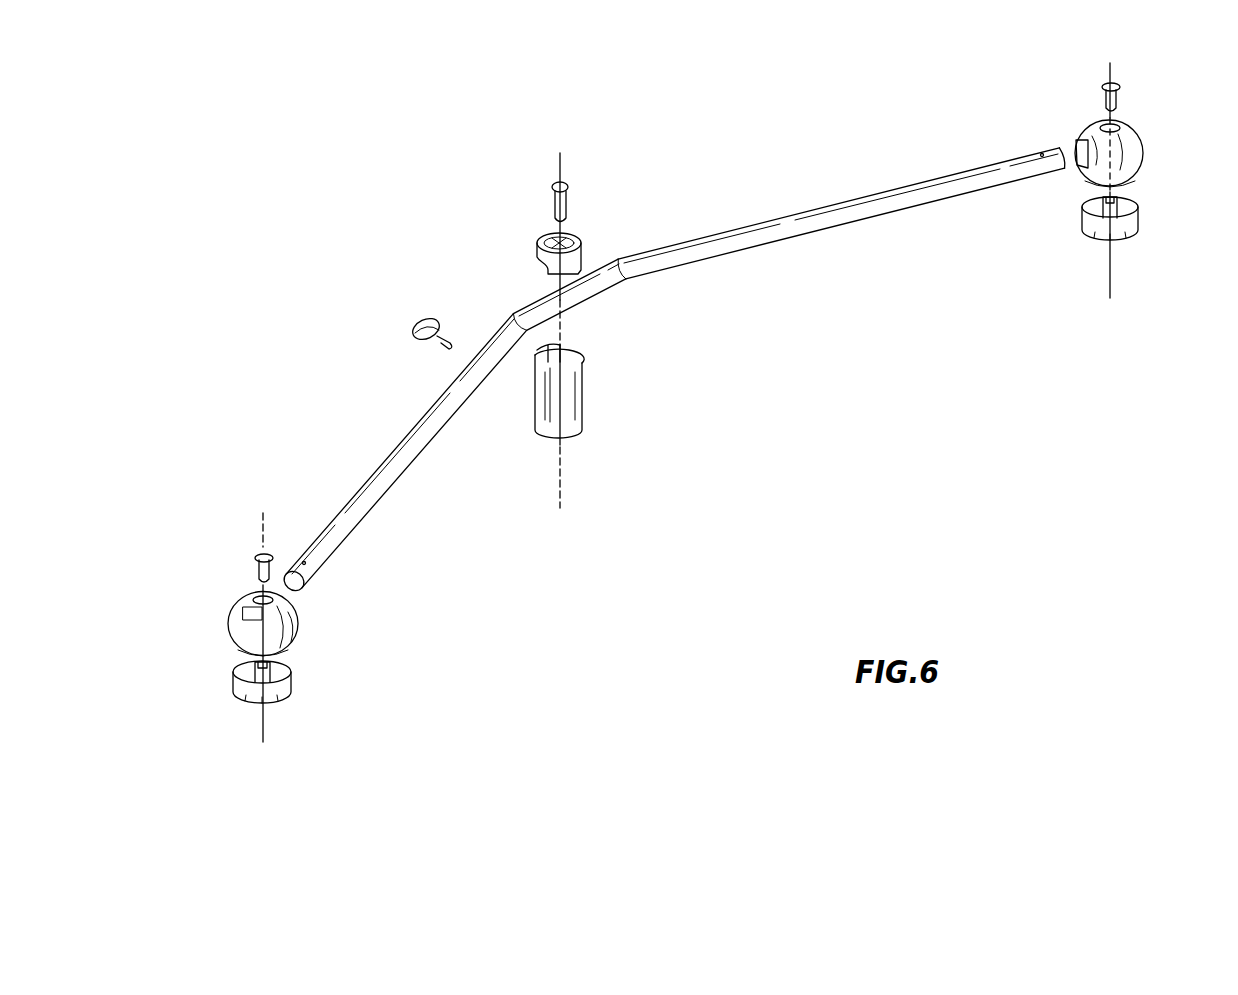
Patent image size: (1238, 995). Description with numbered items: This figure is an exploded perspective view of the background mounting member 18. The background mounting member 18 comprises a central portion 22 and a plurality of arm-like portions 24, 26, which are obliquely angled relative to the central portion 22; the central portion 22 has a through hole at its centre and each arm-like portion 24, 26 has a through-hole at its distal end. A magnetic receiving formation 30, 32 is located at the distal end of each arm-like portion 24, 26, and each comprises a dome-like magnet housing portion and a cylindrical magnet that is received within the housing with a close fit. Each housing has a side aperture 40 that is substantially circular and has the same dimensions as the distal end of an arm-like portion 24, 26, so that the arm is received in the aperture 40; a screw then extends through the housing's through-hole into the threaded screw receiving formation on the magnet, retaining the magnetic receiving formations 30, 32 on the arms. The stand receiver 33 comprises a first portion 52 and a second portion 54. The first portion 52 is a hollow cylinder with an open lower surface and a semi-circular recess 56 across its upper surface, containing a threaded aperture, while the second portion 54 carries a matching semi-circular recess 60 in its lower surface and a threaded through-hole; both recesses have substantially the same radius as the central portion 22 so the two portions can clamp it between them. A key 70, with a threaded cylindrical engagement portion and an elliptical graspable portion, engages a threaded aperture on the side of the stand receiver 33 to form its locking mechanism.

The background mounting member 18 is at (672, 371).
The central portion 22 is at (607, 283).
The arm-like portion 24 is at (405, 467).
The arm-like portion 26 is at (828, 229).
The magnetic receiving formation 30 is at (1082, 178).
The magnetic receiving formation 32 is at (249, 561).
The stand receiver 33 is at (549, 345).
The aperture 40 is at (1080, 140).
The first portion 52 is at (572, 405).
The second portion 54 is at (582, 260).
The recess 56 is at (563, 348).
The recess 60 is at (540, 277).
The key 70 is at (428, 327).